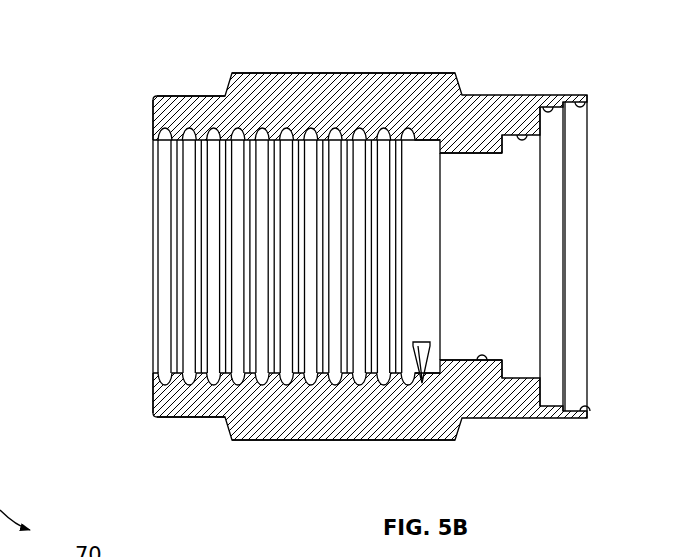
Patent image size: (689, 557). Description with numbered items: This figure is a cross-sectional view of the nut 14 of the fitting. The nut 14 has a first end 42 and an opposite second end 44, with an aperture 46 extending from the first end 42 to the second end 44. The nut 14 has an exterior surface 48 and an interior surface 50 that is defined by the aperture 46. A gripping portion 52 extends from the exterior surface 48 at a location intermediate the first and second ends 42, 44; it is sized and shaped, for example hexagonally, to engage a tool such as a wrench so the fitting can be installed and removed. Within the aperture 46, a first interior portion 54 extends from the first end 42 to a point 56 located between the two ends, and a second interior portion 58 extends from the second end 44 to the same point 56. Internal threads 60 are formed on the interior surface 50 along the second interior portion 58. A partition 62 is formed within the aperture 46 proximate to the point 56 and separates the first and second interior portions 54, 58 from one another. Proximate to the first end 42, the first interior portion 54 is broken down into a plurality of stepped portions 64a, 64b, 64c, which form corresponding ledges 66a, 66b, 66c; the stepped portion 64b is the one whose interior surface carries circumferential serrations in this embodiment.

The nut 14 is at (80, 55).
The first end 42 is at (589, 414).
The second end 44 is at (152, 107).
The aperture 46 is at (484, 292).
The exterior surface 48 is at (187, 95).
The interior surface 50 is at (480, 362).
The gripping portion 52 is at (300, 72).
The first interior portion 54 is at (477, 160).
The point 56 is at (432, 367).
The second interior portion 58 is at (205, 315).
The internal threads 60 is at (210, 218).
The partition 62 is at (428, 137).
The stepped portion 64a is at (572, 158).
The stepped portion 64b is at (549, 212).
The stepped portion 64c is at (524, 265).
The ledge 66a is at (588, 102).
The ledge 66b is at (547, 105).
The ledge 66c is at (519, 132).